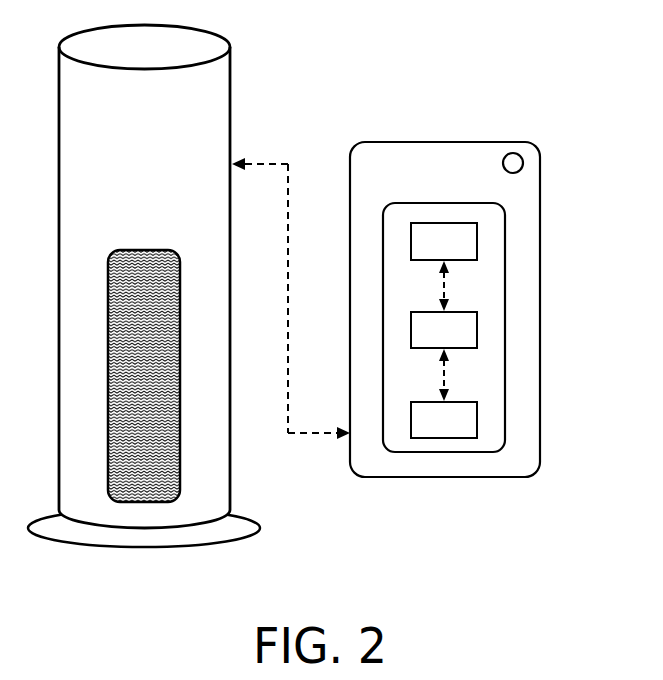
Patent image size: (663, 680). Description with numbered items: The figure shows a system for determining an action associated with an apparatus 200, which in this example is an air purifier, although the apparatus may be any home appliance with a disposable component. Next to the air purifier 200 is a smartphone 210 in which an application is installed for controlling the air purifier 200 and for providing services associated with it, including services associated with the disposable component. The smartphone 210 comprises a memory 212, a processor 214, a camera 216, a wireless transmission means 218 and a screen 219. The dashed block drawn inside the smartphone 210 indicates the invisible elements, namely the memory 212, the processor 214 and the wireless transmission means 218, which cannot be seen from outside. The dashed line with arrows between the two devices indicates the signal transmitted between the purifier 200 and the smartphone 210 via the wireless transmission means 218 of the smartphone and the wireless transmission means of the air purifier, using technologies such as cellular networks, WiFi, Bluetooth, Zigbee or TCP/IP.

The apparatus 200 is at (165, 106).
The smartphone 210 is at (463, 177).
The memory 212 is at (463, 254).
The processor 214 is at (463, 344).
The camera 216 is at (523, 163).
The wireless transmission means 218 is at (463, 432).
The screen 219 is at (505, 287).